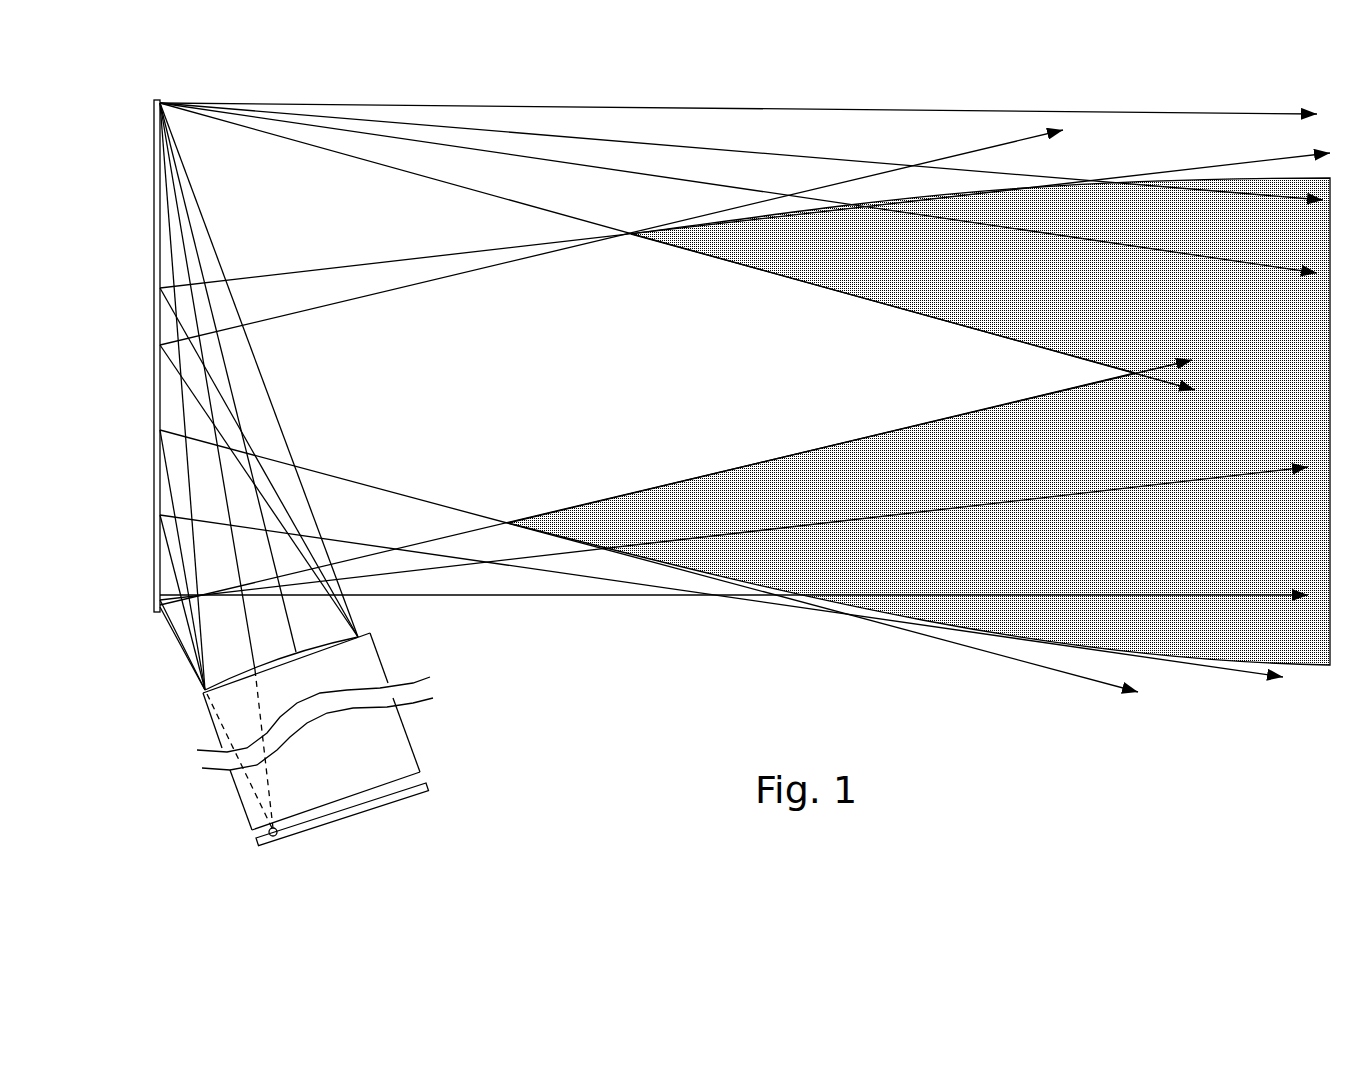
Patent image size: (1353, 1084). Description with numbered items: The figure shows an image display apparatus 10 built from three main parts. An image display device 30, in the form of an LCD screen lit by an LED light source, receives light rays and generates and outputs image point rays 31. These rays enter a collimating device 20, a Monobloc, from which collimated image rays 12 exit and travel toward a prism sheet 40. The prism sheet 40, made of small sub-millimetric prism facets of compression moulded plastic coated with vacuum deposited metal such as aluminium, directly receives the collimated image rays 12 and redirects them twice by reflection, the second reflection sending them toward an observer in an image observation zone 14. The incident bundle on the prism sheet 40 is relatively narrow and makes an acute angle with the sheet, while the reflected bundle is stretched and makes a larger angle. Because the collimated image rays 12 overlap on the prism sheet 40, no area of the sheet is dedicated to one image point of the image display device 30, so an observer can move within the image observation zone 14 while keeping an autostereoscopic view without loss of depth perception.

The image display apparatus 10 is at (128, 690).
The collimated image rays 12 is at (172, 482).
The image observation zone 14 is at (1266, 359).
The collimating device 20 is at (365, 731).
The image display device 30 is at (413, 800).
The image point rays 31 is at (253, 833).
The prism sheet 40 is at (153, 208).